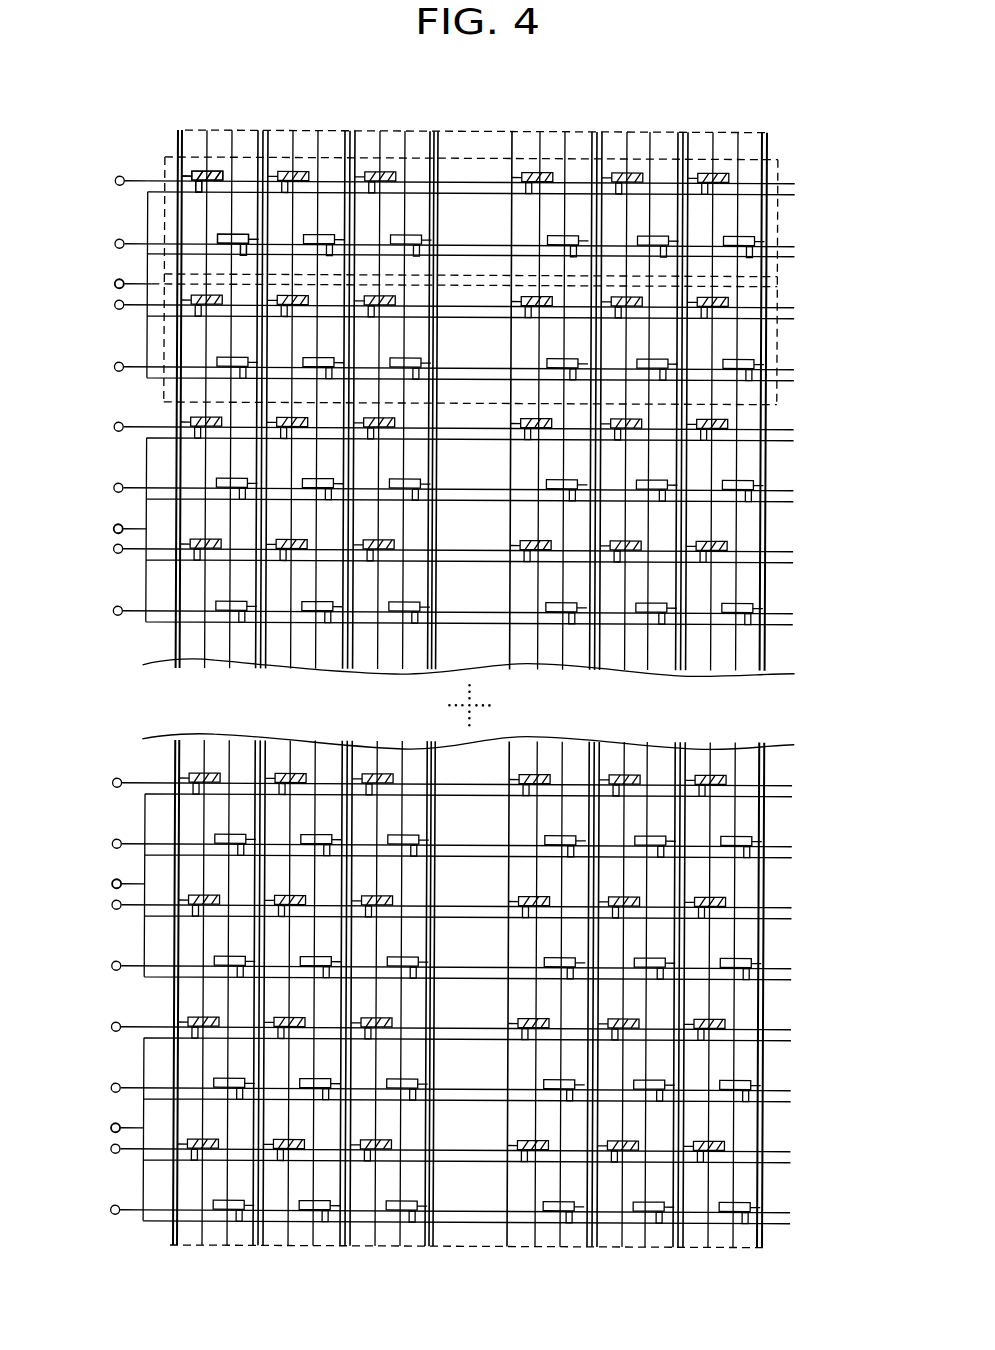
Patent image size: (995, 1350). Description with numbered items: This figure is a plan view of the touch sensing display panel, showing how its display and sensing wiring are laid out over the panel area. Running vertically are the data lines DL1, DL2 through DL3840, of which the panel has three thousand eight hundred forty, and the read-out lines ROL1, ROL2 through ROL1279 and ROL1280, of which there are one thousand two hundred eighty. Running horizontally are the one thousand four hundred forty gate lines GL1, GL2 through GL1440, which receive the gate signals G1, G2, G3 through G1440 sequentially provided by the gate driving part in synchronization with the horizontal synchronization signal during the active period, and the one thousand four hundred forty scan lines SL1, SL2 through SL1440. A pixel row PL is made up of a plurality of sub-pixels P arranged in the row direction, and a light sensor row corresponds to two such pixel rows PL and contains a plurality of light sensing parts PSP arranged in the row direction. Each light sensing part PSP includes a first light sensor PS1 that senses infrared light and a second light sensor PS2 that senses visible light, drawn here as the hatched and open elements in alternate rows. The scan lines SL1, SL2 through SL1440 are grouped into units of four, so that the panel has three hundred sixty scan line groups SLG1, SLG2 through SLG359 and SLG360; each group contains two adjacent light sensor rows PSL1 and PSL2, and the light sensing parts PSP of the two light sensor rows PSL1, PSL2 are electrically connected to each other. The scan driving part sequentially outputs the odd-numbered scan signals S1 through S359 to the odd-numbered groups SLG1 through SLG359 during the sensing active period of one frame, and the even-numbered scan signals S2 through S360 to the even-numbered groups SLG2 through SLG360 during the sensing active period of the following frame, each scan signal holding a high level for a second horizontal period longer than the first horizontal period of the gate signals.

The read-out line ROL1 is at (186, 133).
The read-out line ROL2 is at (256, 133).
The read-out line ROL1279 is at (696, 132).
The read-out line ROL1280 is at (764, 132).
The sub-pixel P is at (552, 131).
The pixel row PL is at (785, 131).
The light sensing part PSP is at (86, 115).
The first light sensor PS1 is at (190, 174).
The second light sensor PS2 is at (218, 238).
The light sensor row PSL1 is at (165, 211).
The light sensor row PSL2 is at (165, 399).
The gate signal G1 is at (117, 180).
The gate signal G2 is at (116, 243).
The gate signal G3 is at (440, 305).
The gate signal G1440 is at (94, 1209).
The gate line GL1 is at (787, 179).
The gate line GL2 is at (787, 240).
The gate line GL1440 is at (788, 1208).
The scan line SL1 is at (787, 193).
The scan line SL2 is at (787, 254).
The scan line SL1440 is at (788, 1222).
The scan signal S1 is at (431, 284).
The scan signal S2 is at (115, 529).
The scan signal S359 is at (103, 883).
The scan signal S360 is at (102, 1127).
The scan line group SLG1 is at (148, 340).
The scan line group SLG2 is at (148, 575).
The scan line group SLG359 is at (150, 930).
The scan line group SLG360 is at (153, 1175).
The data line DL1 is at (175, 1237).
The data line DL2 is at (208, 1237).
The data line DL3840 is at (770, 1240).